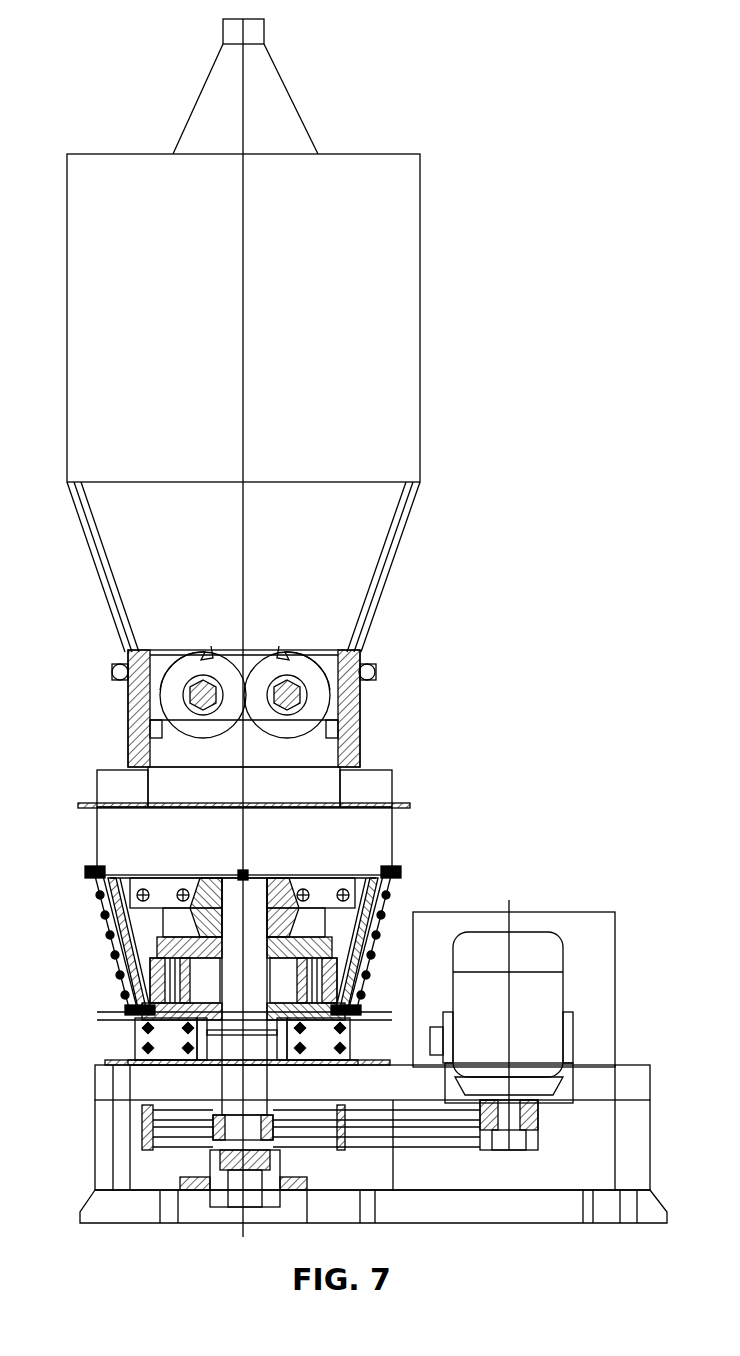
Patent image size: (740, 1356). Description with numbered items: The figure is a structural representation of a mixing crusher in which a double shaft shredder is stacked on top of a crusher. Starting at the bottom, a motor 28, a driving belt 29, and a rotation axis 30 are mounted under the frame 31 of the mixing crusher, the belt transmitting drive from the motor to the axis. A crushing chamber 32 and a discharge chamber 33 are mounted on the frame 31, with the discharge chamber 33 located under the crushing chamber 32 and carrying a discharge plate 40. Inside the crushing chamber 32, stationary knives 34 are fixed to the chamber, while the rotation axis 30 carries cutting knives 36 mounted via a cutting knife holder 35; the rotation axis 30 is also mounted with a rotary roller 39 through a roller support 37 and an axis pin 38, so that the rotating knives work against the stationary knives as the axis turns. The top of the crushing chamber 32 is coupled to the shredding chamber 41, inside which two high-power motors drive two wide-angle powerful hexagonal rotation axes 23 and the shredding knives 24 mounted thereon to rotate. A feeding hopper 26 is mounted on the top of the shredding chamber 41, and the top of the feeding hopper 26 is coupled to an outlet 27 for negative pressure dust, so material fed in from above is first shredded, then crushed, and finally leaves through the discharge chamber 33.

The wide-angle powerful hexagonal rotation axis 23 is at (288, 730).
The shredding knives 24 is at (265, 832).
The feeding hopper 26 is at (325, 365).
The outlet for negative pressure dust 27 is at (270, 118).
The motor 28 is at (530, 1007).
The driving belt 29 is at (370, 1125).
The rotation axis 30 is at (312, 887).
The frame 31 is at (147, 1083).
The crushing chamber 32 is at (145, 923).
The discharge chamber 33 is at (132, 1027).
The stationary knives 34 is at (343, 930).
The cutting knife holder 35 is at (133, 890).
The cutting knives 36 is at (322, 920).
The roller support 37 is at (323, 938).
The axis pin 38 is at (340, 972).
The rotary roller 39 is at (343, 968).
The discharge plate 40 is at (325, 1043).
The shredding chamber 41 is at (255, 900).